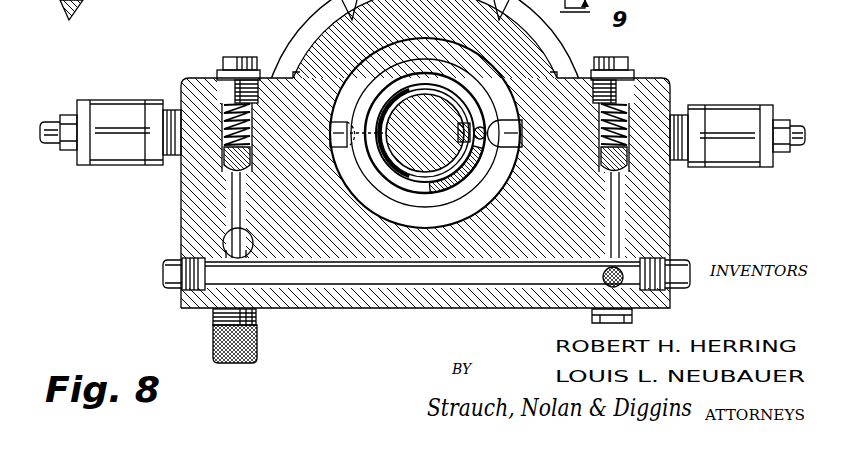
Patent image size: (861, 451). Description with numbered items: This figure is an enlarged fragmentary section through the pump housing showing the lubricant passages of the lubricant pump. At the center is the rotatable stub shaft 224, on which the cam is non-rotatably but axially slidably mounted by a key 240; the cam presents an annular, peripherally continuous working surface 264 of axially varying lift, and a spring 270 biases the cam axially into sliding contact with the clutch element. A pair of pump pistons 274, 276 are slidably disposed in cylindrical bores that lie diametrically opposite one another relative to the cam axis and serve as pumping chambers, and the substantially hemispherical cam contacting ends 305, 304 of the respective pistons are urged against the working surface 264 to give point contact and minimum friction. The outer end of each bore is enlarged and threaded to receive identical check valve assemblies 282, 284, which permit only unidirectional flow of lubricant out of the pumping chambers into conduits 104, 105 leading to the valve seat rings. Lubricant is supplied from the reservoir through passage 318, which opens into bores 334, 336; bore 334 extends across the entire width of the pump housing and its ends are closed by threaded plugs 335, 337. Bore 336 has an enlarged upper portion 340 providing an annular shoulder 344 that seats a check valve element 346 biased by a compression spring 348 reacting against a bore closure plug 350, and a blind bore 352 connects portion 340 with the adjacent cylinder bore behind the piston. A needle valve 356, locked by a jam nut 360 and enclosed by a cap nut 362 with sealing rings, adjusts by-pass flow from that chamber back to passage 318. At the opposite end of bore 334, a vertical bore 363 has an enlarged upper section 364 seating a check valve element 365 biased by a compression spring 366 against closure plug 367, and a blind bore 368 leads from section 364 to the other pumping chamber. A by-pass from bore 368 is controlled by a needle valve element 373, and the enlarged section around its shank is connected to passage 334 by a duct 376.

The conduit 104 is at (52, 122).
The conduit 105 is at (794, 128).
The stub shaft 224 is at (437, 157).
The key 240 is at (462, 127).
The cam working surface 264 is at (468, 72).
The spring 270 is at (395, 85).
The pump piston 274 is at (331, 112).
The pump piston 276 is at (514, 118).
The check valve assembly 282 is at (91, 97).
The check valve assembly 284 is at (718, 103).
The cam contacting end of piston 304 is at (505, 151).
The cam contacting end of piston 305 is at (424, 133).
The passage 318 is at (228, 242).
The bore 334 is at (331, 292).
The threaded plug 335 is at (165, 268).
The bore 336 is at (230, 208).
The threaded plug 337 is at (682, 260).
The enlarged upper portion of bore 340 is at (221, 133).
The annular shoulder 344 is at (222, 170).
The check valve element 346 is at (250, 162).
The compression spring 348 is at (220, 96).
The bore closure plug 350 is at (238, 58).
The blind bore 352 is at (251, 131).
The needle valve 356 is at (253, 240).
The jam nut 360 is at (213, 318).
The cap nut 362 is at (213, 342).
The vertical bore 363 is at (617, 192).
The enlarged upper bore section 364 is at (630, 104).
The check valve element 365 is at (640, 172).
The compression spring 366 is at (599, 116).
The closure plug 367 is at (622, 63).
The blind bore 368 is at (623, 123).
The needle valve element 373 is at (604, 262).
The duct 376 is at (603, 281).